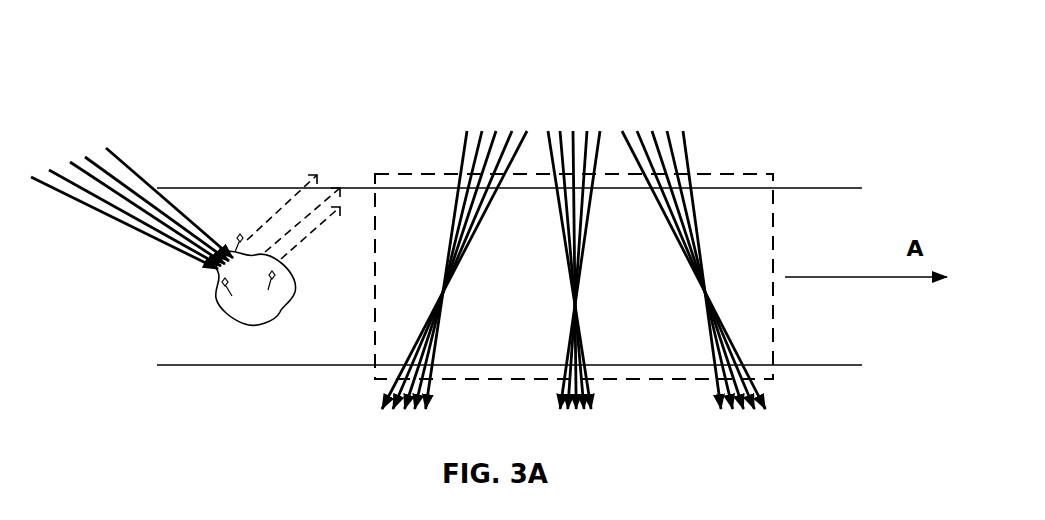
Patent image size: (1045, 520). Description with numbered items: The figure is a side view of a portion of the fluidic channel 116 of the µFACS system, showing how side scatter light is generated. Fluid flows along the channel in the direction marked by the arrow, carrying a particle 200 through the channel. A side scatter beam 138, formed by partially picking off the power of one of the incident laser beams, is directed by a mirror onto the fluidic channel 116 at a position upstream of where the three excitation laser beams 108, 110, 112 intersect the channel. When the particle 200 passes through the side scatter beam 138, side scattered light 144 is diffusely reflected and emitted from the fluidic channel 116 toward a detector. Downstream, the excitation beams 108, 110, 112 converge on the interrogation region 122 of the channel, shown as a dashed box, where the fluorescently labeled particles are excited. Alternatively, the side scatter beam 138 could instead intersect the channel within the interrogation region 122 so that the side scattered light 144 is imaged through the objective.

The excitation beam 108 is at (478, 123).
The excitation beam 110 is at (563, 110).
The excitation beam 112 is at (662, 122).
The fluidic channel 116 is at (808, 188).
The interrogation region 122 is at (745, 172).
The side scatter beam 138 is at (158, 160).
The side scattered light 144 is at (332, 165).
The particle 200 is at (258, 313).